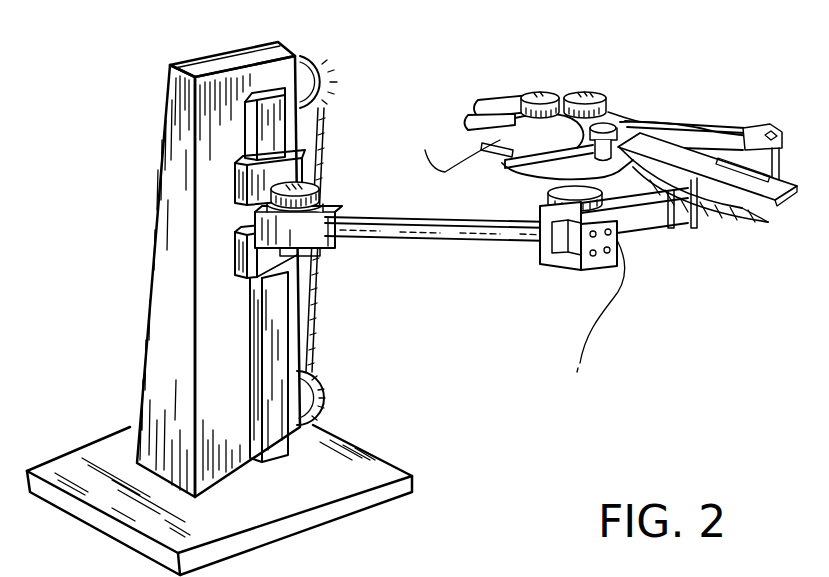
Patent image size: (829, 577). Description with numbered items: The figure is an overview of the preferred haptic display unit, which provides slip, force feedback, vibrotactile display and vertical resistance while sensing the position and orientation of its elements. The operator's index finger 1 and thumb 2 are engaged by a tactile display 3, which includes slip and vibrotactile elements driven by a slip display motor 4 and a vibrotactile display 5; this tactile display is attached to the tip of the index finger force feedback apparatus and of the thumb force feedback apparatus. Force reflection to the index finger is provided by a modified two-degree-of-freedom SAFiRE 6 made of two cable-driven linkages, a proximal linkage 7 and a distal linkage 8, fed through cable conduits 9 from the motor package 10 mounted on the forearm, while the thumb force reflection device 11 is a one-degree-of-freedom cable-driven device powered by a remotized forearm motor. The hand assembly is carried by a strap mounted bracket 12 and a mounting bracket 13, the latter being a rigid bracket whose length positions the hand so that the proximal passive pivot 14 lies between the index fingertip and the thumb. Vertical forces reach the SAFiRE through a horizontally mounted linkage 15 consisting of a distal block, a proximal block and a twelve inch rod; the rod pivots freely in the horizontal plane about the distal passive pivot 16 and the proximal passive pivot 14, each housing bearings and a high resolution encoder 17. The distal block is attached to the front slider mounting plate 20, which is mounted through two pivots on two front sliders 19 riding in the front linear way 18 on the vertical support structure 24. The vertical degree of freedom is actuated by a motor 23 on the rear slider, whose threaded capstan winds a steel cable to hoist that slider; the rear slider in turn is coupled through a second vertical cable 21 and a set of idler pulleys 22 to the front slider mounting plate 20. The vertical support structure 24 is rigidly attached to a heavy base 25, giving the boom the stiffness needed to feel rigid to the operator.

The index finger 1 is at (507, 98).
The thumb 2 is at (528, 176).
The tactile display 3 is at (483, 124).
The slip display motor 4 is at (462, 120).
The vibrotactile display 5 is at (510, 143).
The modified two-degree-of-freedom SAFiRE 6 is at (610, 113).
The proximal linkage of the modified two-degree-of-freedom SAFiRE 7 is at (587, 96).
The distal linkage of the modified two-degree-of-freedom SAFiRE 8 is at (487, 100).
The cable conduits on the modified two-degree-of-freedom SAFiRE 9 is at (637, 123).
The motor package for the index finger and thumb force reflection mechanisms 10 is at (767, 128).
The thumb force reflection device 11 is at (600, 160).
The strap mounted bracket for haptic feedback device 12 is at (760, 224).
The mounting bracket for haptic feedback device 13 is at (638, 225).
The proximal passive pivot 14 is at (565, 260).
The horizontally mounted linkage 15 is at (450, 241).
The distal passive pivot 16 is at (315, 252).
The high resolution encoder 17 is at (320, 187).
The front linear way 18 is at (272, 307).
The front sliders 19 is at (243, 198).
The front slider mounting plate 20 is at (268, 258).
The second vertical cable 21 is at (320, 138).
The set of idler pulleys 22 is at (320, 90).
The motor actuating vertical degree-of-freedom 23 is at (248, 57).
The vertical support structure 24 is at (163, 350).
The heavy base 25 is at (303, 493).